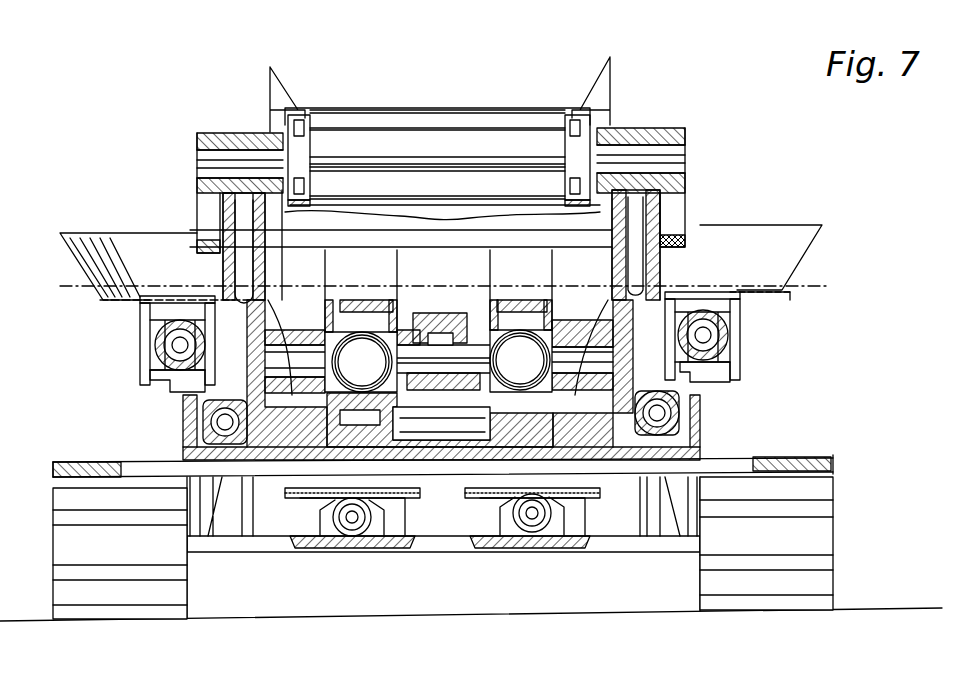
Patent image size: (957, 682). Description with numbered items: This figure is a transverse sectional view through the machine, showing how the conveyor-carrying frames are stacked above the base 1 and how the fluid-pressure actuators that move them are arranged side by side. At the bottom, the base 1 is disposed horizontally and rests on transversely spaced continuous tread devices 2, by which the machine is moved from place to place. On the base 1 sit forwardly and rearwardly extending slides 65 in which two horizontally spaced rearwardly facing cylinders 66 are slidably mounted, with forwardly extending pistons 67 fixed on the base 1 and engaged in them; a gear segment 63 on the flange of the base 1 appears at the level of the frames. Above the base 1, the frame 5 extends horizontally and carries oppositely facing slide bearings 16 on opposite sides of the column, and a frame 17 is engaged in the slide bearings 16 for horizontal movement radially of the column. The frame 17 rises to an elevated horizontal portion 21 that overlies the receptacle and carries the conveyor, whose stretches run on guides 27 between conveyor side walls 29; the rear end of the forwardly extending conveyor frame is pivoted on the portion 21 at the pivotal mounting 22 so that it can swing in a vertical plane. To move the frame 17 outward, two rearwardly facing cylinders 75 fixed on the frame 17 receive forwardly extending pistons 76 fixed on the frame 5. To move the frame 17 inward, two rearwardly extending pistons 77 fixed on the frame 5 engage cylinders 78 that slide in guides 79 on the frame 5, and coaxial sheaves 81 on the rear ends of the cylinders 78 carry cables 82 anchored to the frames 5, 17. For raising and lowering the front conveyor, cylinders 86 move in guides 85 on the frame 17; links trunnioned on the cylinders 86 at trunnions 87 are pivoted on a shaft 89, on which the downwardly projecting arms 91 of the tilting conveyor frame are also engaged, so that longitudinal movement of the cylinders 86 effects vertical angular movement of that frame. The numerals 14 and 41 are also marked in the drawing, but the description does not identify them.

The base 1 is at (620, 545).
The continuous tread devices 2 is at (178, 598).
The frame 5 is at (262, 477).
The hopper 14 is at (790, 250).
The slide bearings 16 is at (200, 432).
The frame 17 is at (610, 477).
The elevated horizontal portion 21 is at (568, 115).
The pivotal mounting 22 is at (672, 156).
The guides 27 is at (575, 200).
The conveyor side walls 29 is at (290, 88).
The chute 41 is at (185, 290).
The gear segment 63 is at (835, 464).
The slides 65 is at (320, 548).
The cylinders 66 is at (365, 530).
The pistons 67 is at (516, 528).
The cylinders 75 is at (205, 420).
The pistons 76 is at (680, 420).
The pistons 77 is at (150, 350).
The cylinders 78 is at (155, 333).
The guides 79 is at (162, 392).
The sheaves 81 is at (140, 306).
The cables 82 is at (745, 296).
The guides 85 is at (470, 395).
The cylinders 86 is at (345, 378).
The trunnions 87 is at (352, 330).
The shaft 89 is at (444, 345).
The arms 91 is at (340, 214).